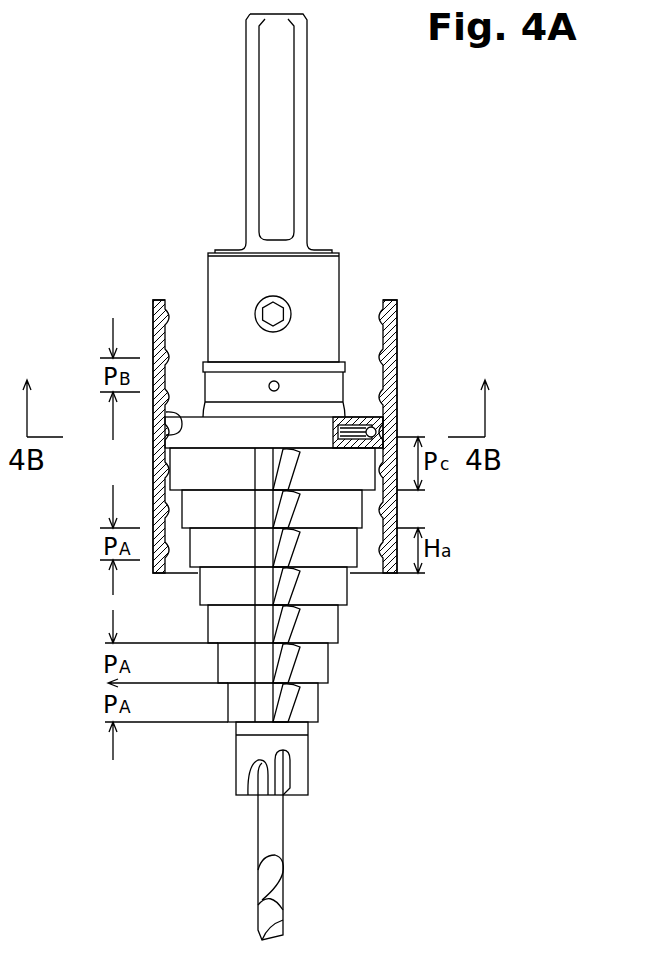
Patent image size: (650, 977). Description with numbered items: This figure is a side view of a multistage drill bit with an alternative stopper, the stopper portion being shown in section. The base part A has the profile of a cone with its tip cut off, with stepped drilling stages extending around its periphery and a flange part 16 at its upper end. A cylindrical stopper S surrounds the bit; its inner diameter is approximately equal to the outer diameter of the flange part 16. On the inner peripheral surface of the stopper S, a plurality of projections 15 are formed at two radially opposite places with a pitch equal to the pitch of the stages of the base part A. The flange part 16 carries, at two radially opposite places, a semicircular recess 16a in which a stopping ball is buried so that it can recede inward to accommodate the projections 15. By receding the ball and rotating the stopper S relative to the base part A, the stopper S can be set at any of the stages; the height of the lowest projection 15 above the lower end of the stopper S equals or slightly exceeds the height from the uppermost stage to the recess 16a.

The projections 15 is at (178, 350).
The flange part 16 is at (342, 460).
The semicircular recess 16a is at (166, 420).
The cylindrical stopper S is at (398, 316).
The base part A is at (353, 510).